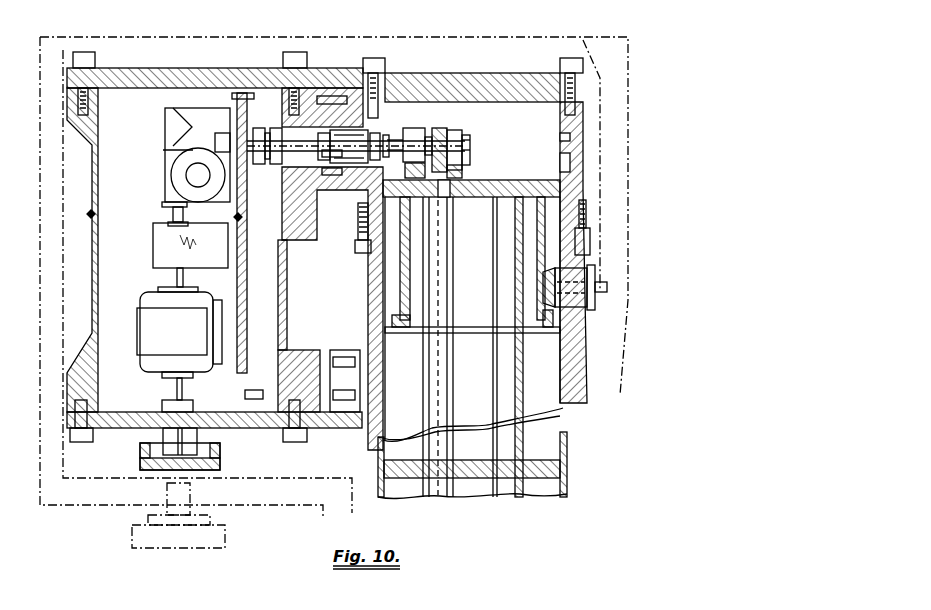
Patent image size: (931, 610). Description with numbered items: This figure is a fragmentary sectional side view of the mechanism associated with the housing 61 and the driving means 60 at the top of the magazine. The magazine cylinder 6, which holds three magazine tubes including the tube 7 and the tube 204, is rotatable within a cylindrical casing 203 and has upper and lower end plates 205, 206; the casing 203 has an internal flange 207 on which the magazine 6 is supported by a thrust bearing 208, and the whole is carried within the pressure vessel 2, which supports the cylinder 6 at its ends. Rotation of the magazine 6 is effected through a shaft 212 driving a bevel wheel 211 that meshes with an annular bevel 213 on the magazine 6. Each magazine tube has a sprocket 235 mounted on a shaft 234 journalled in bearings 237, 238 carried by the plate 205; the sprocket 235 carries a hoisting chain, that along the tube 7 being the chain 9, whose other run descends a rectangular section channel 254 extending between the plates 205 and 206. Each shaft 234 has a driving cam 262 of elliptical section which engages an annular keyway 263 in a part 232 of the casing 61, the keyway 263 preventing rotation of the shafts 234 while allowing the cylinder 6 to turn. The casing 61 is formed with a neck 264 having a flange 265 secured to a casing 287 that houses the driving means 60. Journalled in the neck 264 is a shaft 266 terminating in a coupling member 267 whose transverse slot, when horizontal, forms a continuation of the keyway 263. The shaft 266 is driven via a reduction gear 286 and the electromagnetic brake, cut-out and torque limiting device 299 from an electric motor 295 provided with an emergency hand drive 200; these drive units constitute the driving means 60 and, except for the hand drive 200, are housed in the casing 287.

The pressure vessel 2 is at (40, 503).
The magazine cylinder 6 is at (488, 181).
The magazine tube 7 is at (448, 305).
The hoisting chain 9 is at (444, 184).
The driving means 60 is at (92, 213).
The housing 61 is at (587, 163).
The emergency hand drive 200 is at (228, 531).
The cylindrical casing 203 is at (384, 388).
The magazine tube 204 is at (496, 404).
The upper end plate 205 is at (524, 190).
The lower end plate 206 is at (533, 470).
The internal flange 207 is at (409, 336).
The thrust bearing 208 is at (405, 329).
The bevel wheel 211 is at (543, 287).
The shaft 212 is at (603, 295).
The annular bevel 213 is at (542, 309).
The part of casing 232 is at (568, 167).
The shaft 234 is at (462, 150).
The sprocket 235 is at (442, 128).
The bearing 237 is at (413, 128).
The bearing 238 is at (458, 135).
The rectangular section channel 254 is at (455, 167).
The driving cam 262 is at (388, 140).
The annular keyway 263 is at (570, 147).
The neck 264 is at (343, 112).
The flange 265 is at (335, 96).
The shaft 266 is at (296, 142).
The coupling member 267 is at (370, 170).
The reduction gear 286 is at (166, 119).
The casing 287 is at (99, 151).
The electric motor 295 is at (153, 292).
The electromagnetic brake, cut-out and torque limiting device 299 is at (153, 242).